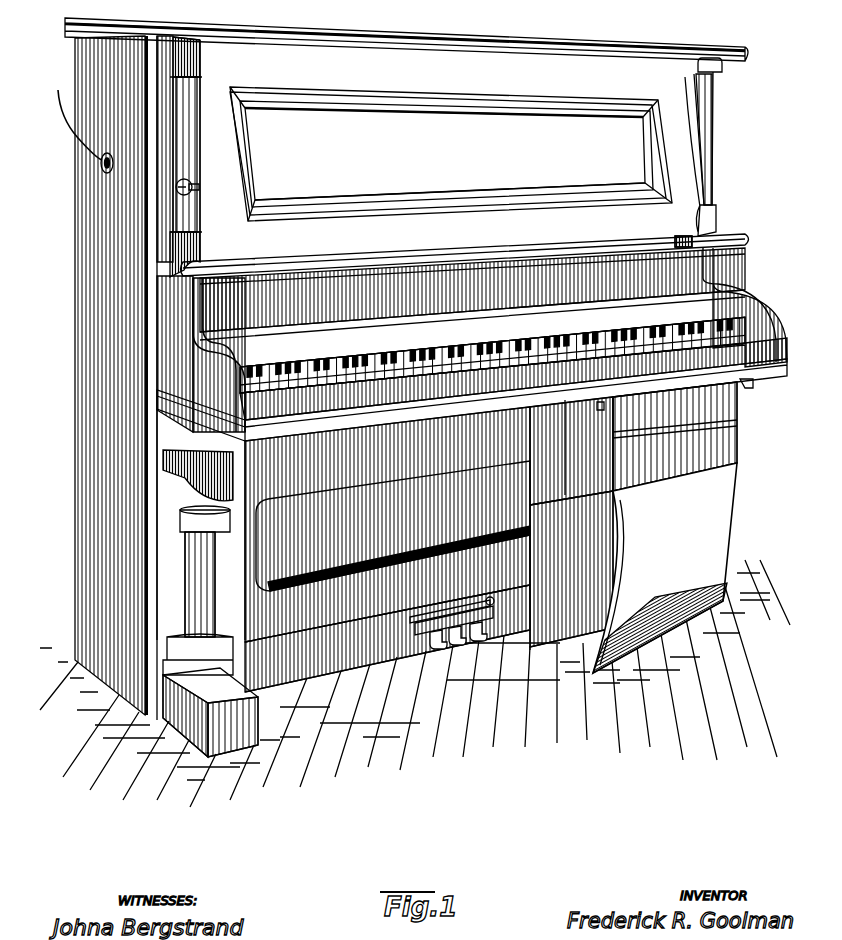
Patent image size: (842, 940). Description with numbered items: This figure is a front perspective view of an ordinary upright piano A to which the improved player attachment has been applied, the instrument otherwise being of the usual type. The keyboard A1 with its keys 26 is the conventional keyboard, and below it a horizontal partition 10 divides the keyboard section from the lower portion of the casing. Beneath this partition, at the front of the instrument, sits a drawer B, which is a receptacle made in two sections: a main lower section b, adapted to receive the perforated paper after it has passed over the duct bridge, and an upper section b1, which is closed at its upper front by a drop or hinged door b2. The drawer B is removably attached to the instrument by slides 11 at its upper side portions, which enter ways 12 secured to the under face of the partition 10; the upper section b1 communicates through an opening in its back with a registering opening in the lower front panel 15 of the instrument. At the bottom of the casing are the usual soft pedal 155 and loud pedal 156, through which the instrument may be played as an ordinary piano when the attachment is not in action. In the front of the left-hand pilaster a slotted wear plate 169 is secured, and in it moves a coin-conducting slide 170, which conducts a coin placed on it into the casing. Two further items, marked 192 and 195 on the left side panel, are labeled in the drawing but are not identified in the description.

The cord 195 is at (58, 90).
The knob 192 is at (100, 163).
The slotted wear plate 169 is at (191, 183).
The coin-conducting slide 170 is at (199, 190).
The keys 26 is at (343, 380).
The keyboard A1 is at (523, 345).
The slides 11 is at (679, 390).
The ways 12 is at (754, 386).
The drop or hinged door b2 is at (675, 436).
The upper section of the drawer b1 is at (571, 523).
The horizontal partition 10 is at (463, 418).
The lower front panel 15 is at (477, 543).
The upright piano A is at (77, 470).
The drawer B is at (665, 568).
The main lower section of the drawer b is at (571, 569).
The loud pedal 156 is at (440, 653).
The soft pedal 155 is at (491, 645).